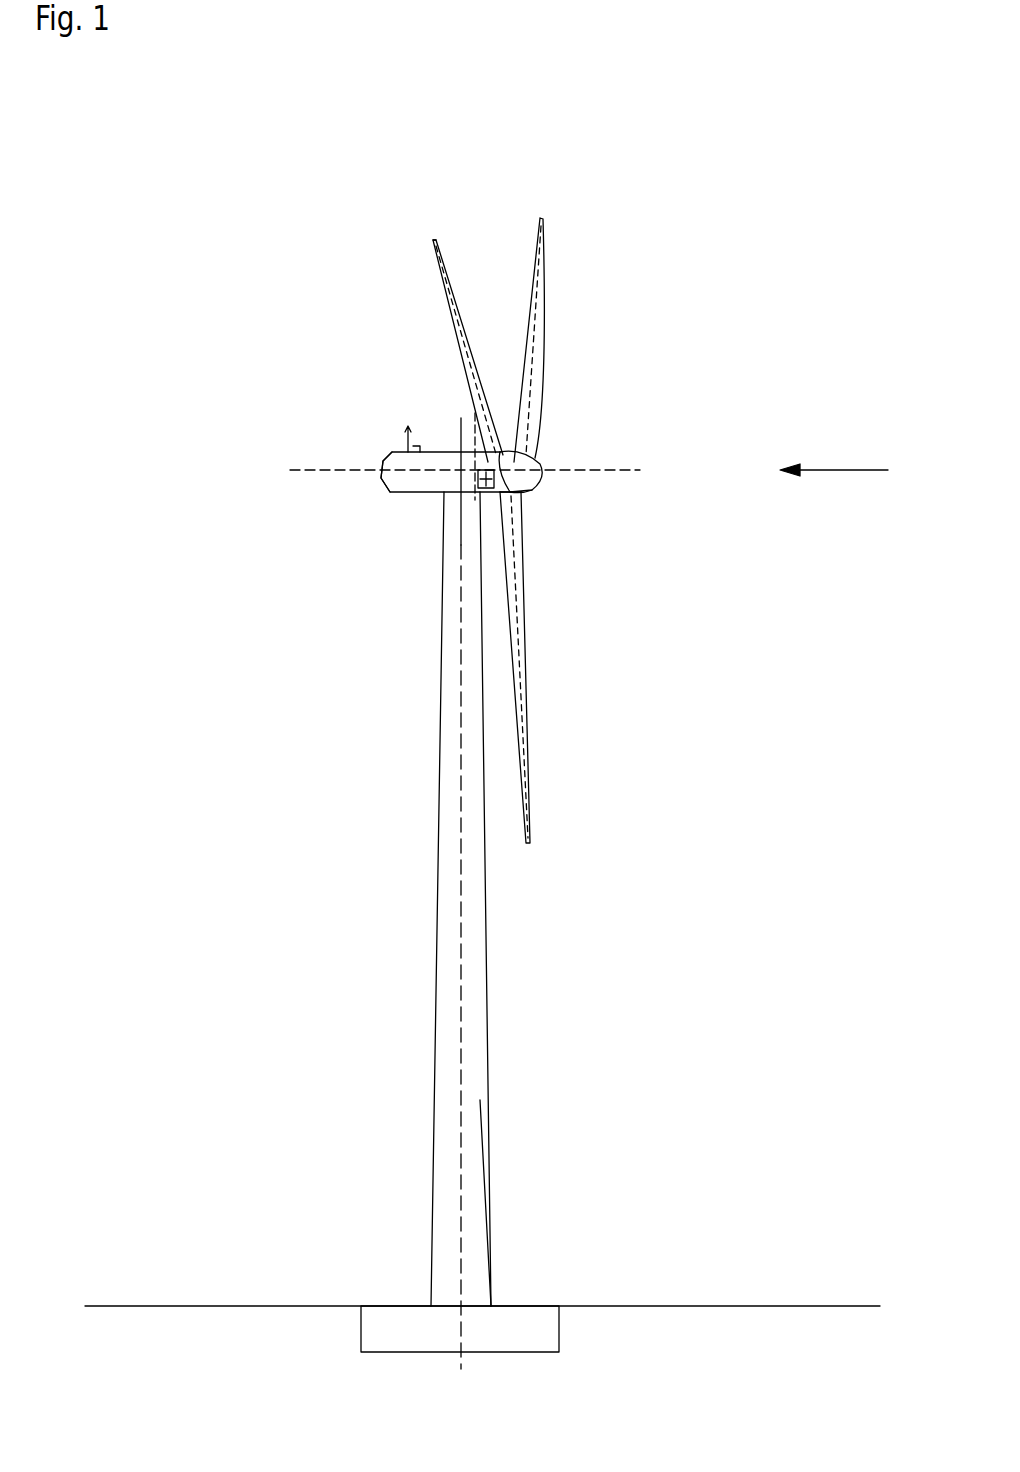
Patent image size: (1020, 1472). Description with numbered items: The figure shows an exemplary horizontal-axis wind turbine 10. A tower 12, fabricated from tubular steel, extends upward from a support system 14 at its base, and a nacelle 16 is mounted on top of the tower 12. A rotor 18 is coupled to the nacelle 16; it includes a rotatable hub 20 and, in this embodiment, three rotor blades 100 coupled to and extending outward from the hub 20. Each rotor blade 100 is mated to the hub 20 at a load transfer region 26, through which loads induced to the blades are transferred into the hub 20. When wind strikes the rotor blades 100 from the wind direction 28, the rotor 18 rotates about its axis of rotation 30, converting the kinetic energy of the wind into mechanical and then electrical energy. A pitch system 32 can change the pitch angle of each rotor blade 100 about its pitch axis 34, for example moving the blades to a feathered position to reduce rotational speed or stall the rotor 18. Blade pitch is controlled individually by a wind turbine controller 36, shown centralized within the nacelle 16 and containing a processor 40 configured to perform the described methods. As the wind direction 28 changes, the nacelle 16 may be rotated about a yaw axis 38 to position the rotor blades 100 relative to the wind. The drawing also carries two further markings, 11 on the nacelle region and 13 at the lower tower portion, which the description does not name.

The wind turbine 10 is at (204, 242).
The nacelle bottom 11 is at (445, 500).
The tower 12 is at (435, 1062).
The tower bottom portion 13 is at (487, 1280).
The support system 14 is at (388, 1322).
The nacelle 16 is at (385, 481).
The rotor 18 is at (577, 520).
The rotatable hub 20 is at (540, 468).
The load transfer region 26 is at (516, 491).
The wind direction 28 is at (856, 470).
The axis of rotation 30 is at (620, 472).
The pitch system 32 is at (526, 526).
The pitch axis 34 is at (433, 240).
The wind turbine controller 36 is at (462, 498).
The yaw axis 38 is at (461, 945).
The processor 40 is at (472, 425).
The rotor blade 100 is at (455, 310).